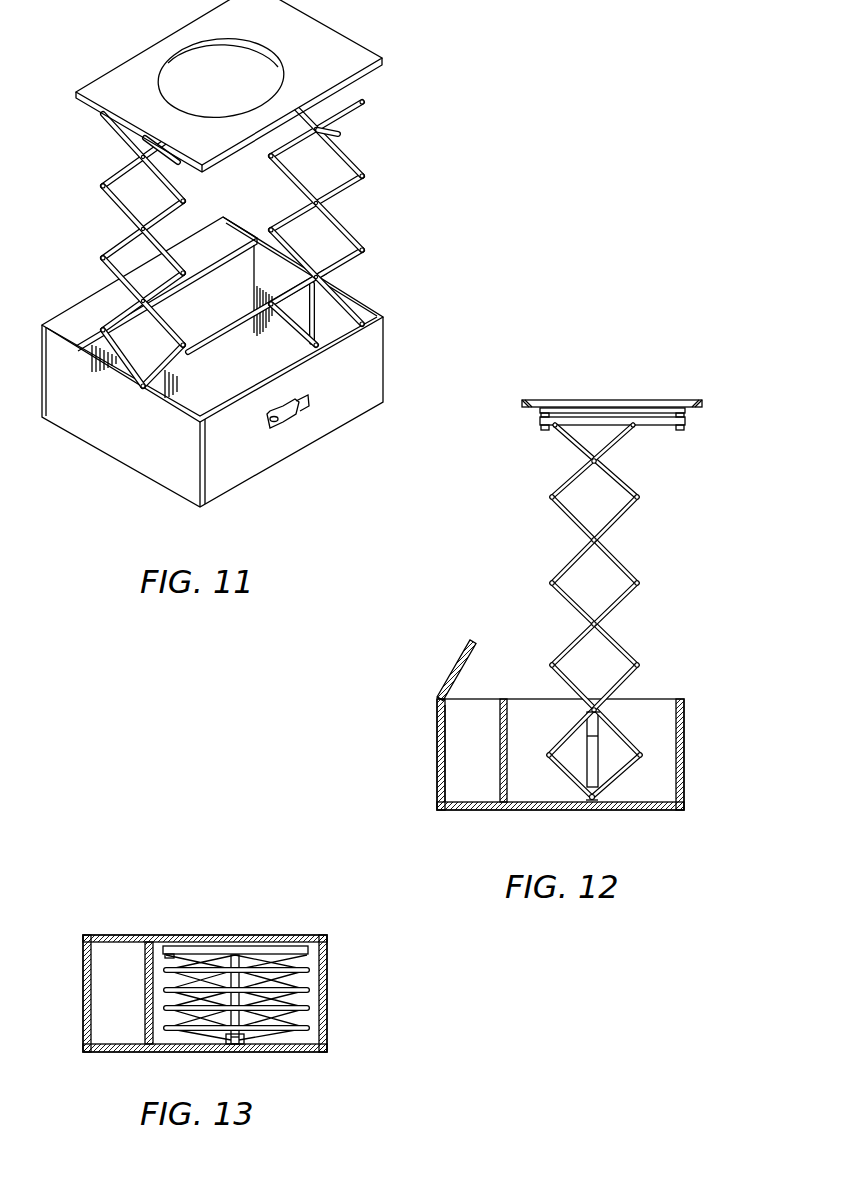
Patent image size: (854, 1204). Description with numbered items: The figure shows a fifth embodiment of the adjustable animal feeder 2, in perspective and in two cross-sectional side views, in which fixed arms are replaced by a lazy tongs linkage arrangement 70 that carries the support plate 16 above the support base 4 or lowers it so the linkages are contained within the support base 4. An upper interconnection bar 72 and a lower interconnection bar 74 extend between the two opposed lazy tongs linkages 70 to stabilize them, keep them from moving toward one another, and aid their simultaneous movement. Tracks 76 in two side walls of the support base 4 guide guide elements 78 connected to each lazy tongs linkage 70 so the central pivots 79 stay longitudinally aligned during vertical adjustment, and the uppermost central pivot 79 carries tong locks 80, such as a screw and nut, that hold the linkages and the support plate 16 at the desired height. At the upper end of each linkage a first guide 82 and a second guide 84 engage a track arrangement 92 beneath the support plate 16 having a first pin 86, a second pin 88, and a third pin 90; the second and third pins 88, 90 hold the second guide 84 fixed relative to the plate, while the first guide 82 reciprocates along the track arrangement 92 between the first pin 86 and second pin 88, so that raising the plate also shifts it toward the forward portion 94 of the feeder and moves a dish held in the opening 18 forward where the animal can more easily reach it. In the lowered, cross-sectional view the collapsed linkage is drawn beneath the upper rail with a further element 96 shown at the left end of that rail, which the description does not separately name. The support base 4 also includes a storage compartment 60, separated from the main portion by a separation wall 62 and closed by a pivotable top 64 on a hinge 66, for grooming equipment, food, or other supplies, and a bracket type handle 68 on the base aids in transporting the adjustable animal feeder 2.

In FIG. 11, the adjustable animal feeder 2 is at (400, 153).
In FIG. 12, the adjustable animal feeder 2 is at (416, 670).
In FIG. 13, the adjustable animal feeder 2 is at (354, 987).
In FIG. 11, the support base 4 is at (355, 372).
In FIG. 12, the support base 4 is at (647, 700).
In FIG. 13, the support base 4 is at (327, 970).
In FIG. 11, the support plate 16 is at (297, 23).
In FIG. 12, the support plate 16 is at (533, 400).
In FIG. 11, the opening 18 is at (203, 60).
In FIG. 12, the storage compartment 60 is at (462, 755).
In FIG. 13, the storage compartment 60 is at (110, 977).
In FIG. 12, the separation wall 62 is at (507, 748).
In FIG. 11, the pivotable top 64 is at (83, 315).
In FIG. 12, the pivotable top 64 is at (502, 693).
In FIG. 13, the pivotable top 64 is at (108, 935).
In FIG. 12, the hinge 66 is at (437, 700).
In FIG. 11, the handle 68 is at (300, 416).
In FIG. 11, the lazy tongs linkage 70 is at (349, 207).
In FIG. 12, the lazy tongs linkage 70 is at (556, 530).
In FIG. 13, the lazy tongs linkage 70 is at (309, 1015).
In FIG. 11, the upper interconnection bar 72 is at (243, 313).
In FIG. 12, the upper interconnection bar 72 is at (600, 713).
In FIG. 13, the upper interconnection bar 72 is at (226, 1028).
In FIG. 12, the lower interconnection bar 74 is at (587, 806).
In FIG. 13, the lower interconnection bar 74 is at (230, 1042).
In FIG. 11, the track 76 is at (310, 315).
In FIG. 12, the track 76 is at (598, 762).
In FIG. 12, the guide element 78 is at (599, 738).
In FIG. 13, the guide element 78 is at (237, 1037).
In FIG. 12, the central pivot 79 is at (600, 460).
In FIG. 11, the tong lock 80 is at (148, 162).
In FIG. 12, the tong lock 80 is at (590, 456).
In FIG. 12, the first guide 82 is at (637, 417).
In FIG. 13, the first guide 82 is at (288, 946).
In FIG. 12, the second guide 84 is at (542, 426).
In FIG. 12, the first pin 86 is at (693, 415).
In FIG. 12, the second pin 88 is at (565, 408).
In FIG. 12, the third pin 90 is at (540, 418).
In FIG. 12, the track arrangement 92 is at (680, 432).
In FIG. 12, the forward portion 94 is at (690, 735).
In FIG. 13, the guide 96 is at (173, 946).